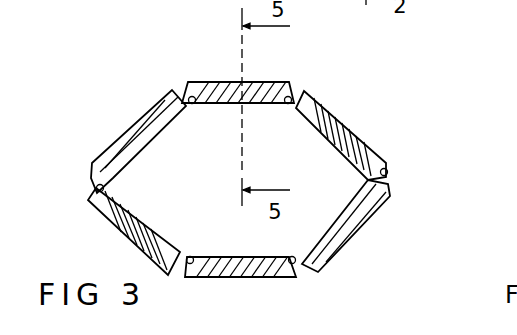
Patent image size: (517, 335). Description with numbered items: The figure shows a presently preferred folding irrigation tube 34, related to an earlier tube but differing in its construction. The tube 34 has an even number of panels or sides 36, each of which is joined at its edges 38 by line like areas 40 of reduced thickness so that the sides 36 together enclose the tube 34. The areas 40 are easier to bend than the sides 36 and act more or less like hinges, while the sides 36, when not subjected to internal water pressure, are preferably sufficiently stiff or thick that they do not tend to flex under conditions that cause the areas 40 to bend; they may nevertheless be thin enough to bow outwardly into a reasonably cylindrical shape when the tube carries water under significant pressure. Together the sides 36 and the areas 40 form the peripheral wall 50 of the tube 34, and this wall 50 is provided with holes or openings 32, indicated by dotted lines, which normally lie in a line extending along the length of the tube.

The holes or openings 32 is at (240, 80).
The tube 34 is at (438, 115).
The panels or sides 36 is at (264, 82).
The edges 38 is at (186, 108).
The line like areas of reduced thickness 40 is at (186, 88).
The peripheral wall 50 is at (330, 260).